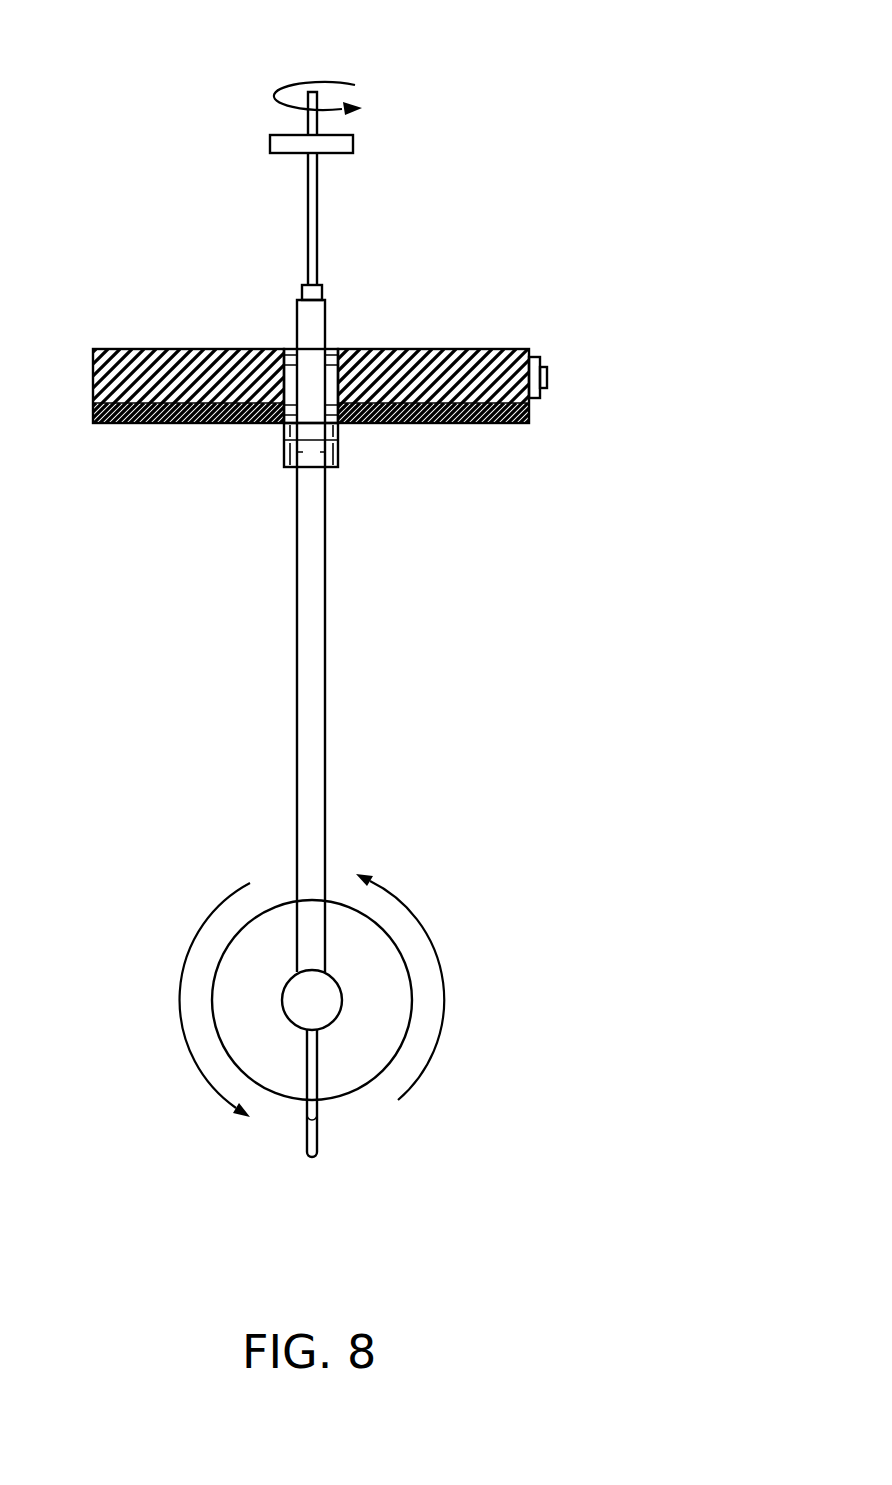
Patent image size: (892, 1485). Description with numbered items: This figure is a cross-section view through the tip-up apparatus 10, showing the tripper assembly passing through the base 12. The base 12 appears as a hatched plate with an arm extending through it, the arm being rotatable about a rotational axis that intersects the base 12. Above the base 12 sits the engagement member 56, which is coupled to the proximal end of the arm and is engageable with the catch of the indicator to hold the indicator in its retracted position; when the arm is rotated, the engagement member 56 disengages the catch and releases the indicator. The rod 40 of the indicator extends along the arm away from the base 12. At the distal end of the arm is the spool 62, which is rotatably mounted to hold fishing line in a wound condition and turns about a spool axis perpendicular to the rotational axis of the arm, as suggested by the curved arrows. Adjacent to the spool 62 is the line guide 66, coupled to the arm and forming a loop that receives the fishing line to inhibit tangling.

The tip-up apparatus 10 is at (508, 128).
The base 12 is at (522, 320).
The rod 40 is at (320, 676).
The engagement member 56 is at (288, 150).
The spool 62 is at (363, 1078).
The line guide 66 is at (310, 1153).